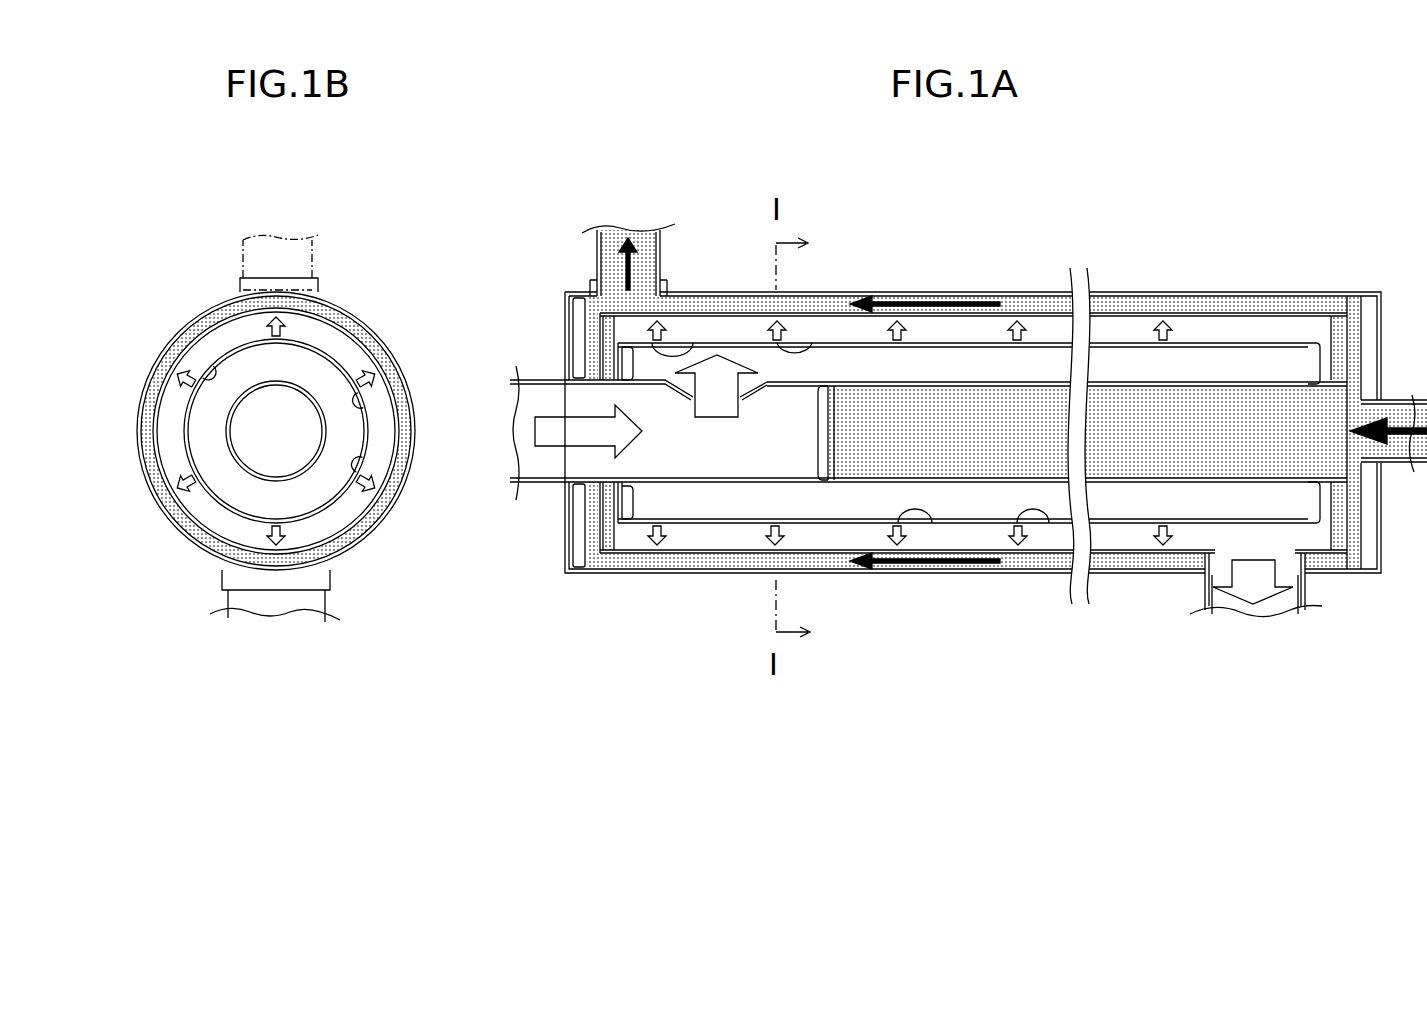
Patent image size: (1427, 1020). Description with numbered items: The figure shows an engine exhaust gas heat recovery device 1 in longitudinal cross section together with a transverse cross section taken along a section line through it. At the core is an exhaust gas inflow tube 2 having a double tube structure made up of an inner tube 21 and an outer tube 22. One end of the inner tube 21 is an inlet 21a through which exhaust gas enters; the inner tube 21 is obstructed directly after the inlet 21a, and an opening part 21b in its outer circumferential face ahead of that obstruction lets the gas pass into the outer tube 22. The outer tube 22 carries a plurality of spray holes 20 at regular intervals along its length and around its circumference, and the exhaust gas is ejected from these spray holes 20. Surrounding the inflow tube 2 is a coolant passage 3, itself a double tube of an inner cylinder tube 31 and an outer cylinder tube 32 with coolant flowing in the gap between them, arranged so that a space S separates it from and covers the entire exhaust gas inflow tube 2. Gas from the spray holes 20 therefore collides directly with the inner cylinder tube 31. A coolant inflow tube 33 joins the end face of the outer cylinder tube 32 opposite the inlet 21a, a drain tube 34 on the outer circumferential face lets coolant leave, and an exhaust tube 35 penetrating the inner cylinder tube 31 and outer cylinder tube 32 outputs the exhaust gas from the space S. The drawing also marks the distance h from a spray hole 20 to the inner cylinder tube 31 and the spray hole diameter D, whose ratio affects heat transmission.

In FIG. 1B, the engine exhaust gas heat recovery device 1 is at (228, 171).
In FIG. 1A, the engine exhaust gas heat recovery device 1 is at (822, 155).
In FIG. 1B, the exhaust gas inflow tube 2 is at (213, 676).
In FIG. 1A, the exhaust gas inflow tube 2 is at (745, 643).
In FIG. 1B, the coolant passage 3 is at (448, 208).
In FIG. 1A, the coolant passage 3 is at (1290, 210).
In FIG. 1B, the spray holes 20 is at (214, 372).
In FIG. 1A, the spray holes 20 is at (703, 343).
In FIG. 1B, the inner tube 21 is at (247, 463).
In FIG. 1A, the inner tube 21 is at (730, 483).
In FIG. 1A, the inlet 21a is at (548, 485).
In FIG. 1A, the opening part 21b is at (750, 399).
In FIG. 1B, the outer tube 22 is at (232, 506).
In FIG. 1A, the outer tube 22 is at (682, 523).
In FIG. 1B, the inner cylinder tube 31 is at (350, 318).
In FIG. 1A, the inner cylinder tube 31 is at (1248, 313).
In FIG. 1B, the outer cylinder tube 32 is at (397, 338).
In FIG. 1A, the outer cylinder tube 32 is at (1195, 292).
In FIG. 1A, the coolant inflow tube 33 is at (1390, 400).
In FIG. 1B, the drain tube 34 is at (243, 240).
In FIG. 1A, the drain tube 34 is at (664, 252).
In FIG. 1B, the exhaust tube 35 is at (315, 605).
In FIG. 1A, the exhaust tube 35 is at (1205, 598).
In FIG. 1B, the space S is at (177, 457).
In FIG. 1A, the space S is at (952, 330).
In FIG. 1A, the diameter of the spray holes D is at (1020, 378).
In FIG. 1A, the distance between each spray hole and the inner cylinder tube h is at (1117, 287).